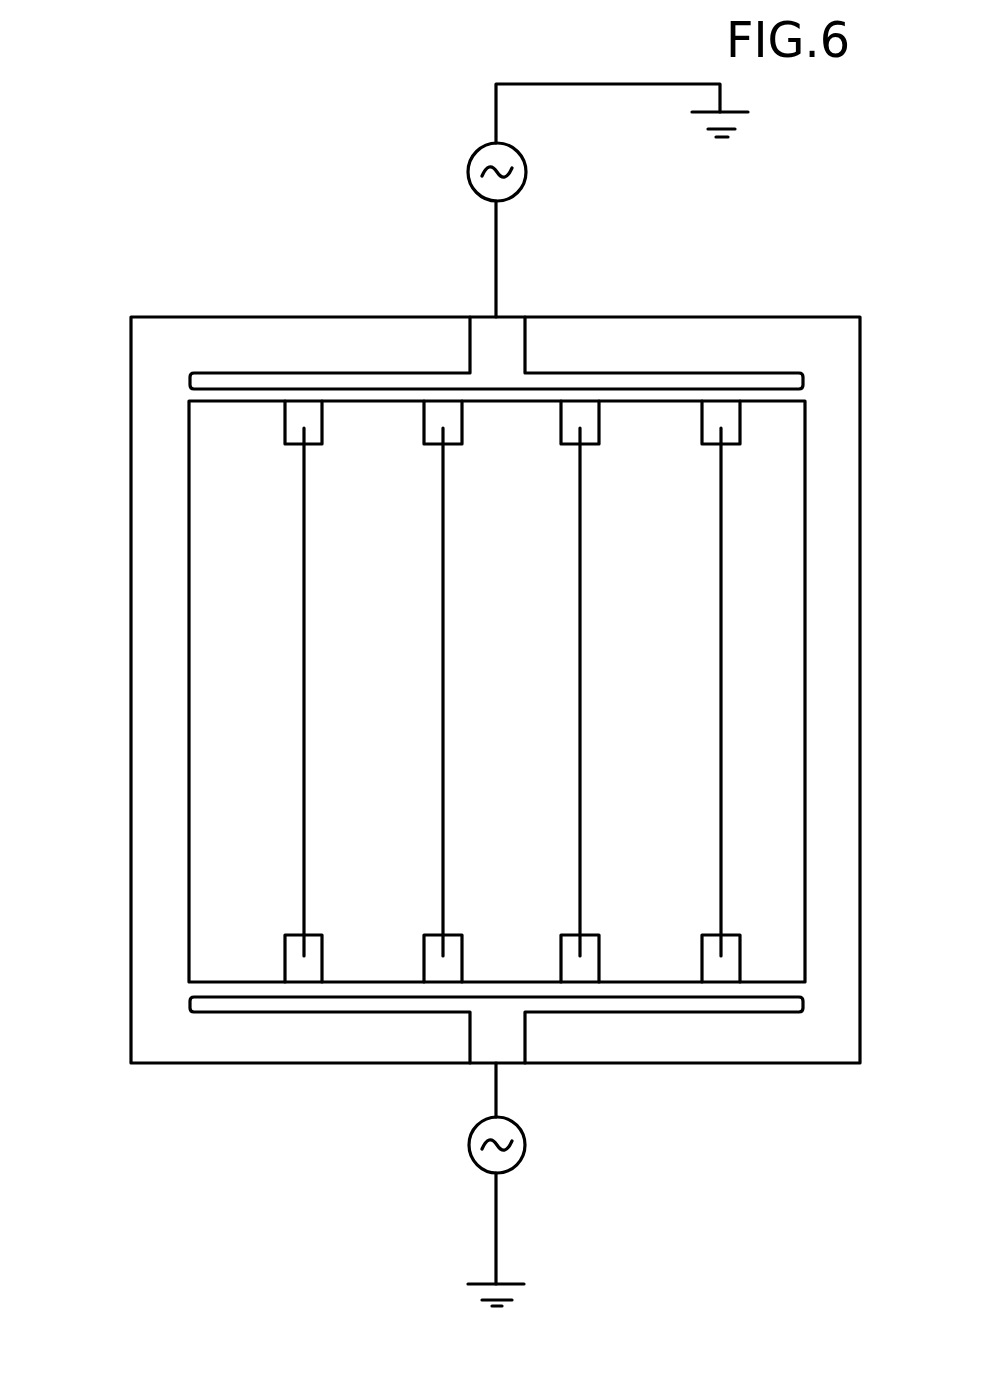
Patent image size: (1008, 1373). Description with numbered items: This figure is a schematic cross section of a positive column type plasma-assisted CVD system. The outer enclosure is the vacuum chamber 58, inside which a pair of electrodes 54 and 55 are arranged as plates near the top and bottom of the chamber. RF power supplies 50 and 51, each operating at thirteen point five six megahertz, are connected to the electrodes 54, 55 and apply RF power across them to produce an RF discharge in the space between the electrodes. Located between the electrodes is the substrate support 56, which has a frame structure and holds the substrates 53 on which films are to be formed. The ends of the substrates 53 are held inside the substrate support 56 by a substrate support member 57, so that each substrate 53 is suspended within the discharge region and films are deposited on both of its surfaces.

The RF power supply 50 is at (496, 143).
The RF power supply 51 is at (499, 1175).
The substrate 53 is at (580, 530).
The electrode 54 is at (358, 372).
The electrode 55 is at (387, 1012).
The substrate support 56 is at (188, 720).
The substrate support member 57 is at (300, 417).
The vacuum chamber 58 is at (583, 316).